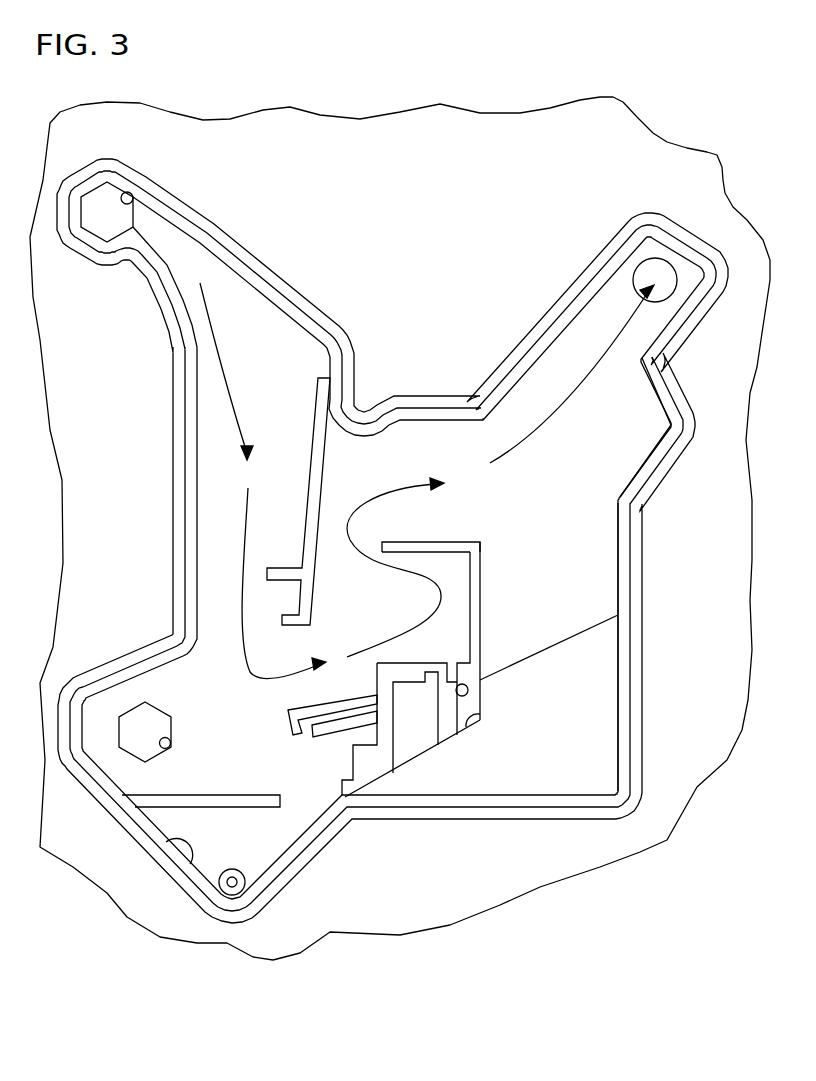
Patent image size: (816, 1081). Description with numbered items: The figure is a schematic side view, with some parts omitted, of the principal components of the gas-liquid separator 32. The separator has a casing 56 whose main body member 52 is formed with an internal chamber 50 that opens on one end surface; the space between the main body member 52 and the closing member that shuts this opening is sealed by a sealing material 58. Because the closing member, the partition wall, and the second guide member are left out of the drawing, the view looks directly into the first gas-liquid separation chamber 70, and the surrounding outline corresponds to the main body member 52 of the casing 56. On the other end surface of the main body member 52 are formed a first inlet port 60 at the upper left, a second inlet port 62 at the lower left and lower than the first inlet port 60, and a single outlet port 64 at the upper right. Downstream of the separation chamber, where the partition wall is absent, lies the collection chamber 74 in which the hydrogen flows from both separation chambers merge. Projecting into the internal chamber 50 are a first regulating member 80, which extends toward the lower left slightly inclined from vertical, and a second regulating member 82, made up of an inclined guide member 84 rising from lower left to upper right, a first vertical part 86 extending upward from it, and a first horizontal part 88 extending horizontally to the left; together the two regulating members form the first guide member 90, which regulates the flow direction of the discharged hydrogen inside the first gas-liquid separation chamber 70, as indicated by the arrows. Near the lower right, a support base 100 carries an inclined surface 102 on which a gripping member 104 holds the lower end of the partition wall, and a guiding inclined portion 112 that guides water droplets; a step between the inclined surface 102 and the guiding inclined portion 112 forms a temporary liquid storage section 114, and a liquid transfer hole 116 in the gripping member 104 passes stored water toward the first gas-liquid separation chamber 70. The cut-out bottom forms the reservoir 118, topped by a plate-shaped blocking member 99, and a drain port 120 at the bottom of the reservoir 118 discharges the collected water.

The gas-liquid separator 32 is at (683, 81).
The main body member 52 is at (292, 122).
The casing 56 is at (400, 528).
The internal chamber 50 is at (292, 319).
The sealing material 58 is at (247, 247).
The first inlet port 60 is at (130, 192).
The second inlet port 62 is at (172, 740).
The outlet port 64 is at (640, 268).
The first gas-liquid separation chamber 70 is at (213, 565).
The collection chamber 74 is at (645, 412).
The first regulating member 80 is at (320, 457).
The second regulating member 82 is at (492, 531).
The inclined guide member 84 is at (294, 719).
The first vertical part 86 is at (479, 606).
The first horizontal part 88 is at (433, 541).
The first guide member 90 is at (409, 518).
The blocking member 99 is at (214, 795).
The support base 100 is at (600, 730).
The inclined surface 102 is at (386, 772).
The gripping member 104 is at (422, 745).
The guiding inclined portion 112 is at (573, 630).
The temporary liquid storage section 114 is at (478, 716).
The liquid transfer hole 116 is at (469, 690).
The reservoir 118 is at (166, 846).
The drain port 120 is at (232, 869).